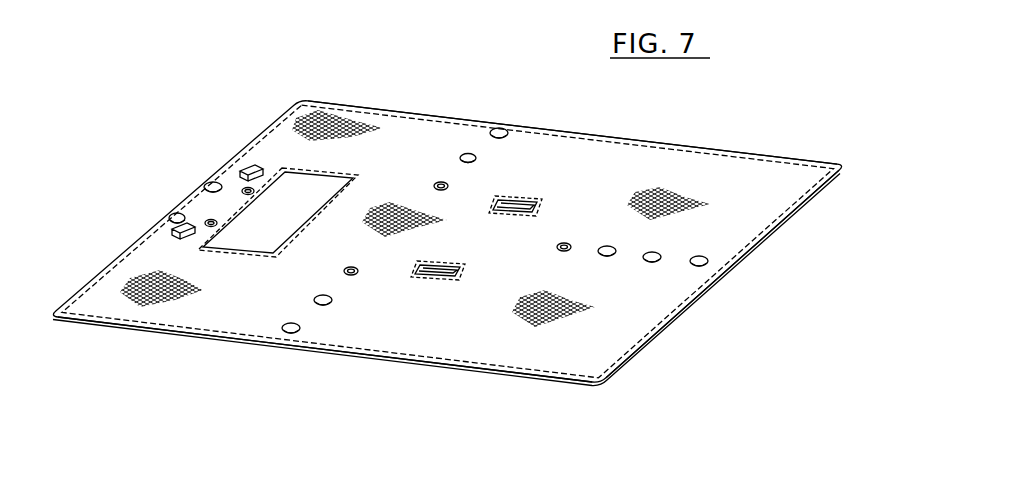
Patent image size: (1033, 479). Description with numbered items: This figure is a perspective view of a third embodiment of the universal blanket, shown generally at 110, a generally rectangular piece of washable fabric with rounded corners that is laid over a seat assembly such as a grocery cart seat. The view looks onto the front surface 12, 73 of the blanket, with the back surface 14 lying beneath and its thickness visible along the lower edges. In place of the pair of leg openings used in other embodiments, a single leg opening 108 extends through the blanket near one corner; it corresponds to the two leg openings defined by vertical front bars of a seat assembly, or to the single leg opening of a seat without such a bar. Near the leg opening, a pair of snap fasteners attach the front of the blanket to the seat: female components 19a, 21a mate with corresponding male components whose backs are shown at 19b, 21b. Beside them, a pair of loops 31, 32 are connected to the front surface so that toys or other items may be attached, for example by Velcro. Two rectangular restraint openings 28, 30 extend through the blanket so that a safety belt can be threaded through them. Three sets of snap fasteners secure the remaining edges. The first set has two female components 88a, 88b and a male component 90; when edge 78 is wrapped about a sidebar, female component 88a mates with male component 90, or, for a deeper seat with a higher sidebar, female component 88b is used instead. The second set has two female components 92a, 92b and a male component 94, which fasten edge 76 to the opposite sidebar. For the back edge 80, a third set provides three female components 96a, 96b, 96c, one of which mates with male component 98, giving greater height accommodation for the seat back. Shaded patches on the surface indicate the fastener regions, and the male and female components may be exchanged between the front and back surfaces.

The plate assembly 110 is at (213, 89).
The front surface 12 is at (87, 338).
The back surface 14 is at (546, 394).
The front surface 73 is at (667, 163).
The edge 76 is at (576, 134).
The edge 78 is at (375, 360).
The back edge 80 is at (702, 300).
The single leg opening 108 is at (347, 176).
The loop 32 is at (244, 168).
The loop 31 is at (175, 230).
The female component of snap fastener 21a is at (204, 186).
The male component of snap fastener 21b is at (255, 190).
The female component of snap fastener 19a is at (170, 214).
The male component of snap fastener 19b is at (219, 223).
The female snap component 92b is at (499, 127).
The female snap component 92a is at (477, 158).
The male snap component 94 is at (449, 185).
The restraint opening 30 is at (530, 199).
The restraint opening 28 is at (434, 279).
The male snap component 98 is at (556, 247).
The male snap component 90 is at (360, 268).
The female snap component 88a is at (334, 302).
The female snap component 88b is at (290, 334).
The female snap component 96a is at (605, 258).
The female snap component 96b is at (656, 252).
The female snap component 96c is at (710, 260).